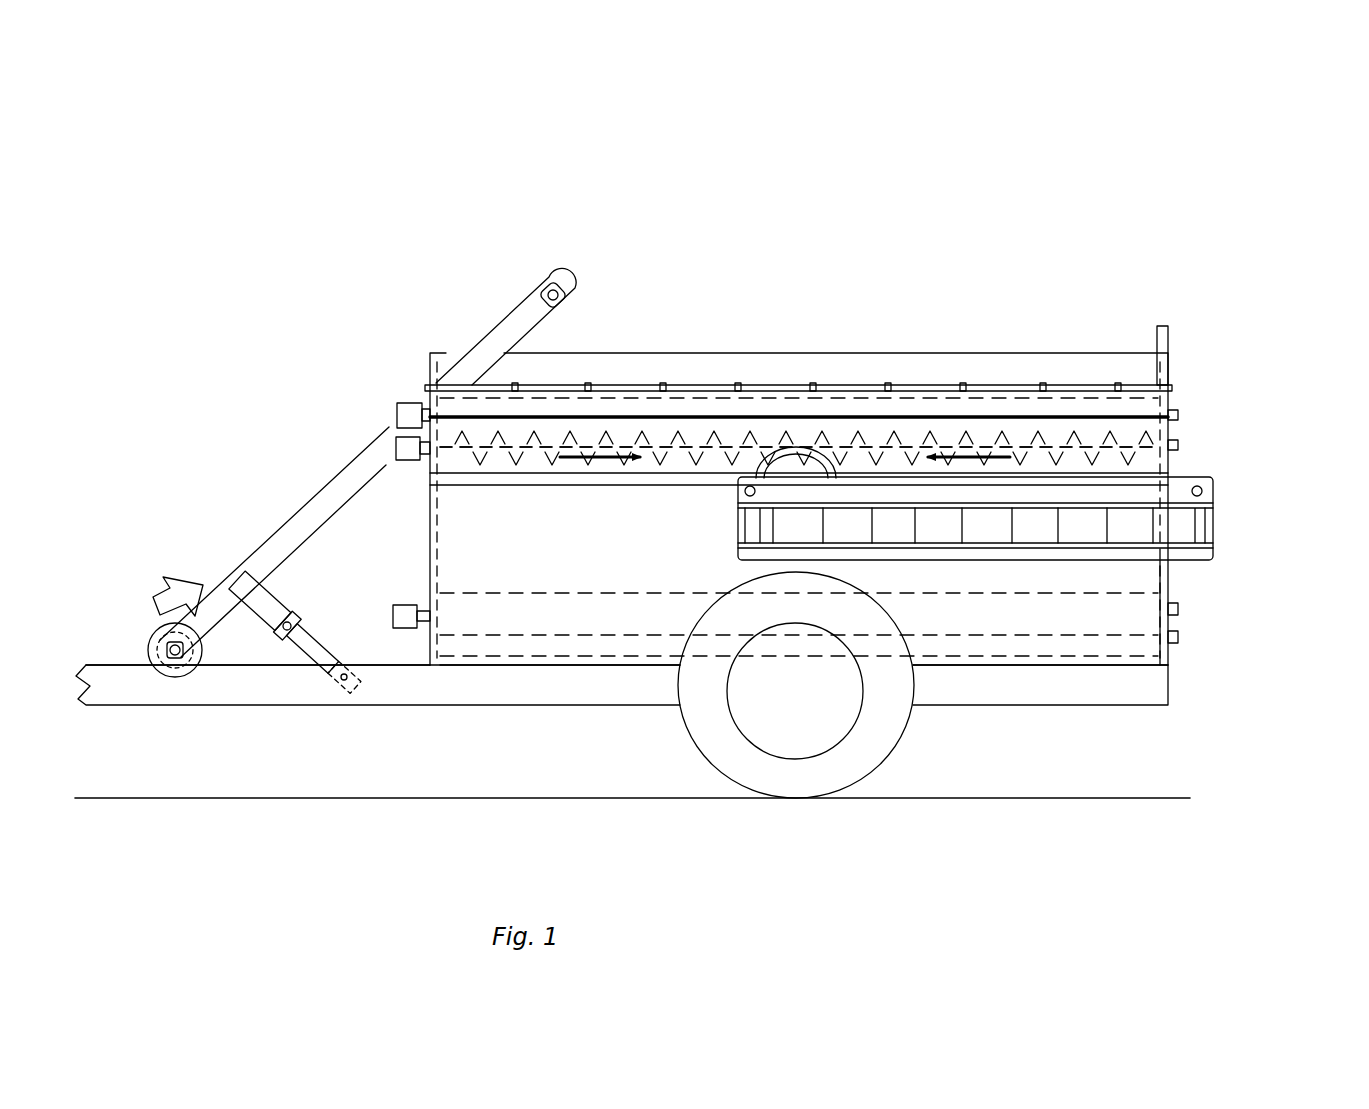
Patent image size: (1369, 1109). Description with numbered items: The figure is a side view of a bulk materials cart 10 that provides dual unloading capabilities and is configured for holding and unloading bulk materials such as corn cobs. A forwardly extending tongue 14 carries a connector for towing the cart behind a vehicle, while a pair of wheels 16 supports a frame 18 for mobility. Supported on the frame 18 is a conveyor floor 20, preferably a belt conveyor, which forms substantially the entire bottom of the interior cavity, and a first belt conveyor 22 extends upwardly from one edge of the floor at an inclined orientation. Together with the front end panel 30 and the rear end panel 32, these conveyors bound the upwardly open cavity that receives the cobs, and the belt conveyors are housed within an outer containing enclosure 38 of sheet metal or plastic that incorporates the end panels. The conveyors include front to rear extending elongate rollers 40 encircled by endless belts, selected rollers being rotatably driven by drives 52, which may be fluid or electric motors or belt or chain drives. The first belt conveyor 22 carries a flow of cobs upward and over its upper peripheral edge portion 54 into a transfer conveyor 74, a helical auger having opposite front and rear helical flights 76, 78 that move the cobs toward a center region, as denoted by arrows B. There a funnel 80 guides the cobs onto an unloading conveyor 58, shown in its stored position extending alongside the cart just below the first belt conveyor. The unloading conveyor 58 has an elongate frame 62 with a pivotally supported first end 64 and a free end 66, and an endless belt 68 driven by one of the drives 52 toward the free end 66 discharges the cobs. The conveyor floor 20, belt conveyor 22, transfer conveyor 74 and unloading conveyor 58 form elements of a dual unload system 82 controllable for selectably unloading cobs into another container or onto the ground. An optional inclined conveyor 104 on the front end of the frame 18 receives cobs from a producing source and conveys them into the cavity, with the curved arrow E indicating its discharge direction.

The bulk materials cart 10 is at (1142, 178).
The tongue 14 is at (100, 664).
The wheels 16 is at (895, 745).
The frame 18 is at (1140, 708).
The conveyor floor 20 is at (500, 593).
The first belt conveyor 22 is at (430, 508).
The front end panel 30 is at (430, 548).
The rear end panel 32 is at (1165, 575).
The outer containing enclosure 38 is at (688, 485).
The rollers 40 is at (1160, 410).
The drives 52 is at (396, 448).
The upper peripheral edge portion 54 is at (1120, 385).
The unloading conveyor 58 is at (1195, 477).
The elongate frame 62 is at (975, 525).
The first end 64 is at (750, 560).
The free end 66 is at (1147, 578).
The endless belt 68 is at (1185, 530).
The transfer conveyor 74 is at (925, 435).
The front helical flight 76 is at (620, 430).
The rear helical flight 78 is at (878, 425).
The funnel 80 is at (793, 452).
The dual unload system 82 is at (1050, 328).
The inclined conveyor 104 is at (497, 323).
The arrows B is at (975, 455).
The conveyor discharge direction E is at (530, 282).